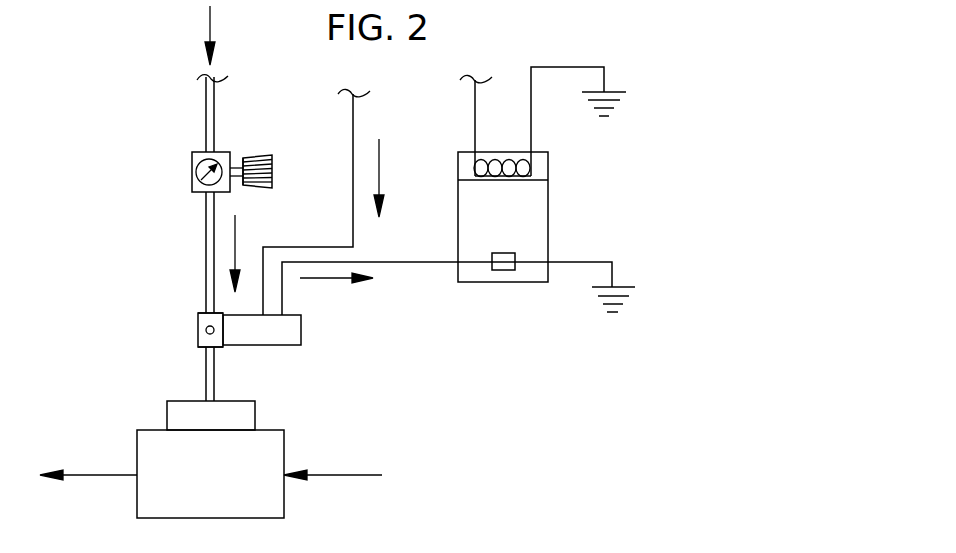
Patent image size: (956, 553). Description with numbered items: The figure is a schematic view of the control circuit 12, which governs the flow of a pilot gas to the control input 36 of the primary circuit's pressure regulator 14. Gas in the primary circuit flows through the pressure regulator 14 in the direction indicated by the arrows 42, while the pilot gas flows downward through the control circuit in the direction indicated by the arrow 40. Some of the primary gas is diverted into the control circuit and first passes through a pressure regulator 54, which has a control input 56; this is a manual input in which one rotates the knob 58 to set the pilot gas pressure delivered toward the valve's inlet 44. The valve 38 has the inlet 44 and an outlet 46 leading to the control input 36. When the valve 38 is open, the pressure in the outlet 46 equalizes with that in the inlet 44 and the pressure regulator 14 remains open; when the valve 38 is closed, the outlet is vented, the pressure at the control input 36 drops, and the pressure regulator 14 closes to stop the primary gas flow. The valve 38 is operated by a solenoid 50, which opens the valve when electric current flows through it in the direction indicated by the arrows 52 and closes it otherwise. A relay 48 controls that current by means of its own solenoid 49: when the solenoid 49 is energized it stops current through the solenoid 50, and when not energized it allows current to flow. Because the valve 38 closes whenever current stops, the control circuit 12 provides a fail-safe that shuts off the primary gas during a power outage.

The control circuit 12 is at (123, 74).
The pressure regulator 14 is at (221, 479).
The control input 36 is at (167, 415).
The valve 38 is at (198, 340).
The arrow 40 is at (240, 238).
The arrows 42 is at (103, 475).
The inlet 44 is at (200, 313).
The outlet 46 is at (200, 347).
The relay 48 is at (548, 208).
The solenoid 49 is at (548, 165).
The solenoid 50 is at (301, 330).
The arrows 52 is at (383, 160).
The pressure regulator 54 is at (192, 160).
The control input 56 is at (251, 158).
The knob 58 is at (263, 158).